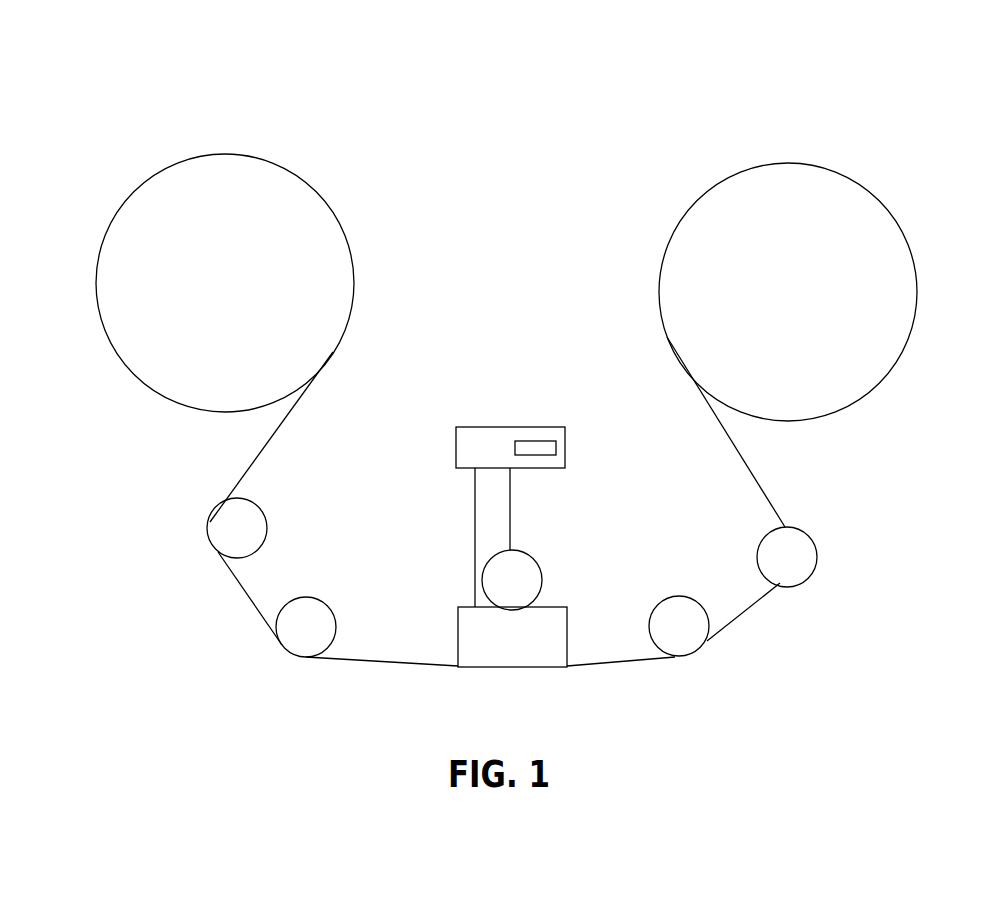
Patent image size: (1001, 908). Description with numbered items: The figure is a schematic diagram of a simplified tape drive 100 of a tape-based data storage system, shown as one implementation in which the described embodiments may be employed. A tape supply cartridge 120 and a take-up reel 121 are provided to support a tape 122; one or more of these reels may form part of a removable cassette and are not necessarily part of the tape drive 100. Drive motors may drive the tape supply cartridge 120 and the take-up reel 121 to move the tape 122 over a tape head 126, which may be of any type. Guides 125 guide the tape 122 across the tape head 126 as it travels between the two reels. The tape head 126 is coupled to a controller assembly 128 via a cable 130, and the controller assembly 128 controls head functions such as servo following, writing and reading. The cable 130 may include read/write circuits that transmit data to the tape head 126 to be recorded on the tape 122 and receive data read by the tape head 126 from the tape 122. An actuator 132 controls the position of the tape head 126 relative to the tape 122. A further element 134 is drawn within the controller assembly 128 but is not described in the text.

The tape drive 100 is at (110, 164).
The tape supply cartridge 120 is at (227, 154).
The take-up reel 121 is at (786, 163).
The tape 122 is at (383, 662).
The guides 125 is at (267, 526).
The tape head 126 is at (568, 636).
The controller assembly 128 is at (510, 427).
The cable 130 is at (475, 577).
The actuator 132 is at (532, 560).
The sensor 134 is at (545, 441).